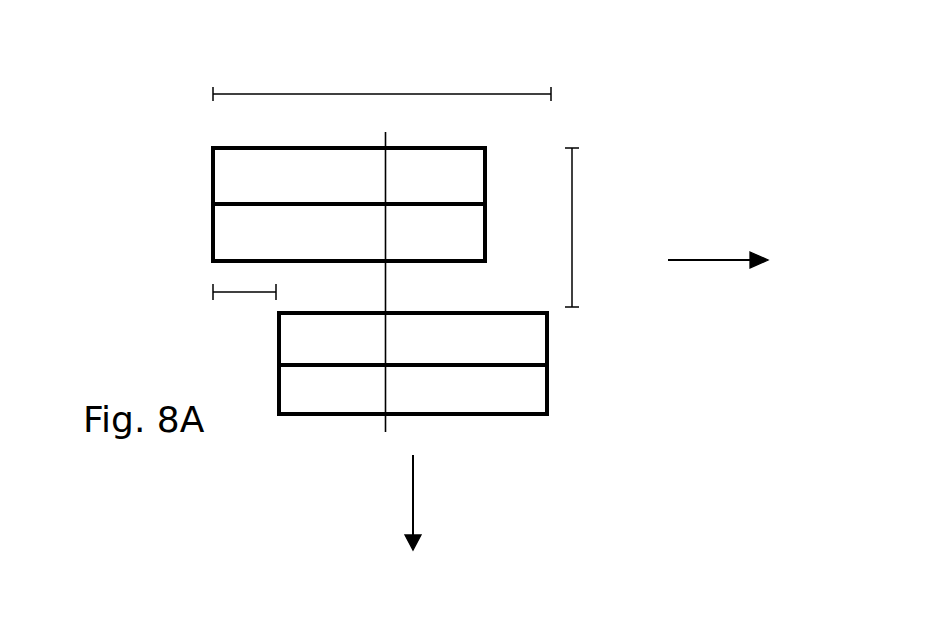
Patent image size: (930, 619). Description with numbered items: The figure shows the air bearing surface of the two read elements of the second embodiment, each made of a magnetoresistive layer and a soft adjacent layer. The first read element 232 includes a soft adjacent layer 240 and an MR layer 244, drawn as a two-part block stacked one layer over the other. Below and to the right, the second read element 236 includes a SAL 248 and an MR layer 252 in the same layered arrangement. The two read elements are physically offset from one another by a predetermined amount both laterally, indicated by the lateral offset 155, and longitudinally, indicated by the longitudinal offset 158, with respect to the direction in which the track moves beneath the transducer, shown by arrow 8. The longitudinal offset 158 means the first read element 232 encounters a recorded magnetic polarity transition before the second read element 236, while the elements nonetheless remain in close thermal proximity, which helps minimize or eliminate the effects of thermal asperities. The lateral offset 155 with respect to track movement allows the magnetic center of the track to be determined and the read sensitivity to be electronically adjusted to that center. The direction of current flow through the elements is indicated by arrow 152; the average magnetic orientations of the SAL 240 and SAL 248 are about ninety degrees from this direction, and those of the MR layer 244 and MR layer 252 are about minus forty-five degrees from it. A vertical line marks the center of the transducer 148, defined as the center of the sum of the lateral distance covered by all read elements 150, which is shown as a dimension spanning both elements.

The arrow indicating track movement direction 8 is at (413, 493).
The center of the transducer 148 is at (383, 423).
The lateral distance covered by all read elements 150 is at (467, 94).
The arrow indicating direction of current flow 152 is at (713, 260).
The lateral offset 155 is at (244, 293).
The longitudinal offset 158 is at (572, 235).
The first read element 232 is at (203, 199).
The second read element 236 is at (558, 360).
The soft adjacent layer 240 is at (475, 165).
The MR layer 244 is at (290, 238).
The soft adjacent layer 248 is at (487, 327).
The MR layer 252 is at (510, 397).